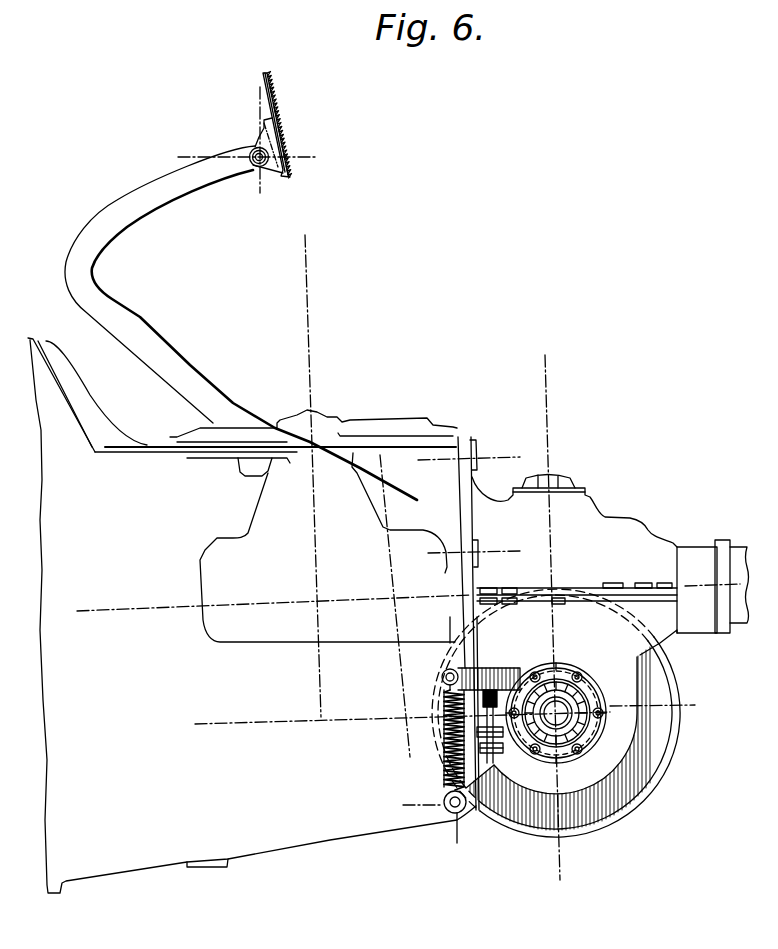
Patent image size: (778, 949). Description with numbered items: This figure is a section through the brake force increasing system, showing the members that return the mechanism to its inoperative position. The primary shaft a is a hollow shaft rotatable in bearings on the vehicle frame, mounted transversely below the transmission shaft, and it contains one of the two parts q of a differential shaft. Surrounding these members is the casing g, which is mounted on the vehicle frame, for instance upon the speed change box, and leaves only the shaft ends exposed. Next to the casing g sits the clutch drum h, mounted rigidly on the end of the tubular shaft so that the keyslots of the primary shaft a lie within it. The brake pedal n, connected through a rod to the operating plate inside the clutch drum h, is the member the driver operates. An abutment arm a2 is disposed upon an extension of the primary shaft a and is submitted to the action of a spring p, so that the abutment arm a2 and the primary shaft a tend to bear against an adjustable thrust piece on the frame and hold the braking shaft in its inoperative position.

The brake pedal n is at (290, 125).
The abutment arm a2 is at (462, 668).
The casing g is at (620, 688).
The clutch drum h is at (657, 743).
The primary shaft a is at (590, 733).
The spring p is at (443, 728).
The part of differential shaft q is at (518, 737).